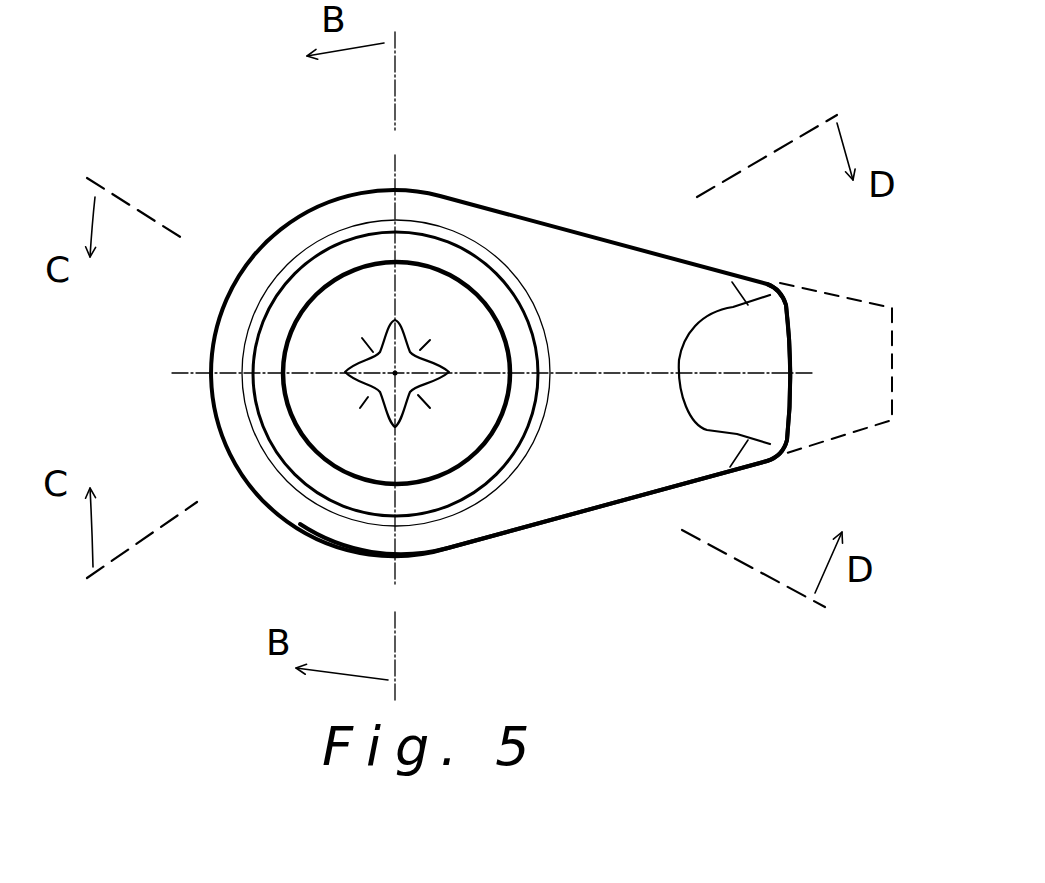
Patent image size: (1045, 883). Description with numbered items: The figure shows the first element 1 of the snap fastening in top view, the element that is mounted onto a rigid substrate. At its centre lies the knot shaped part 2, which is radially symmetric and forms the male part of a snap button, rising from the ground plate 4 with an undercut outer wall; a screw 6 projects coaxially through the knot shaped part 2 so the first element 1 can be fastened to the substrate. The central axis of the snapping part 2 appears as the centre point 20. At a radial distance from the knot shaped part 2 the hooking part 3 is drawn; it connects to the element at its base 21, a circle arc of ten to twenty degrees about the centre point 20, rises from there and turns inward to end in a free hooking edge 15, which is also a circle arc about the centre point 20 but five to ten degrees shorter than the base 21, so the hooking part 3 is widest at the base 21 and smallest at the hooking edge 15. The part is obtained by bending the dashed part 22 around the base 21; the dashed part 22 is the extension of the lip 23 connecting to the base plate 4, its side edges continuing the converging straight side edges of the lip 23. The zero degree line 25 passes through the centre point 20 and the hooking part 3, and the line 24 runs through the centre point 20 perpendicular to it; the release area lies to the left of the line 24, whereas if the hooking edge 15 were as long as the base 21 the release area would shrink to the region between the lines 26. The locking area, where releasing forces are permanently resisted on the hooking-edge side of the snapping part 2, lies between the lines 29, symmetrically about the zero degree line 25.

The first element 1 is at (275, 157).
The knot shaped part 2 is at (510, 247).
The hooking part 3 is at (798, 322).
The ground plate 4 is at (432, 560).
The screw 6 is at (396, 373).
The free hooking edge 15 is at (683, 342).
The centre point 20 is at (405, 357).
The base 21 is at (732, 292).
The dashed part 22 is at (817, 420).
The lip 23 is at (585, 483).
The line 24 is at (398, 72).
The 0 degree line 25 is at (183, 378).
The lines 26 is at (137, 200).
The lines 29 is at (760, 152).